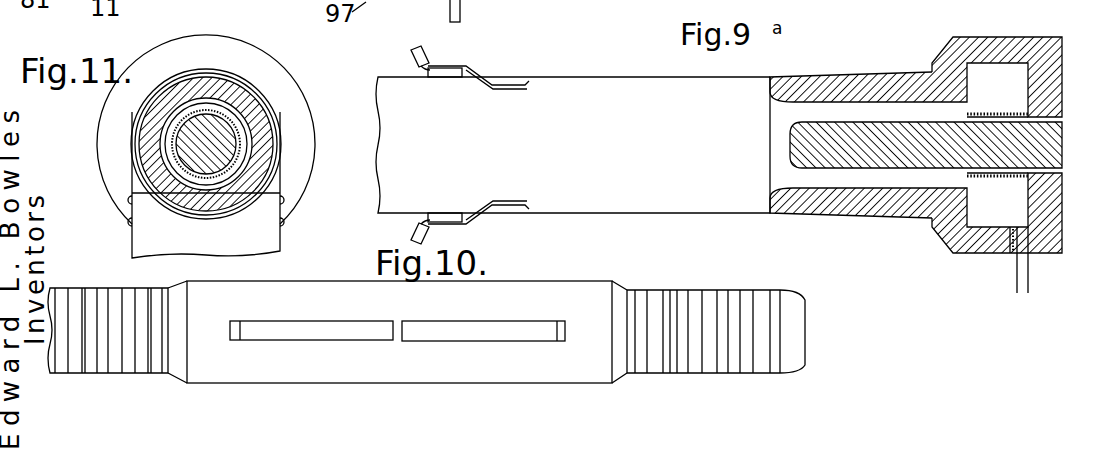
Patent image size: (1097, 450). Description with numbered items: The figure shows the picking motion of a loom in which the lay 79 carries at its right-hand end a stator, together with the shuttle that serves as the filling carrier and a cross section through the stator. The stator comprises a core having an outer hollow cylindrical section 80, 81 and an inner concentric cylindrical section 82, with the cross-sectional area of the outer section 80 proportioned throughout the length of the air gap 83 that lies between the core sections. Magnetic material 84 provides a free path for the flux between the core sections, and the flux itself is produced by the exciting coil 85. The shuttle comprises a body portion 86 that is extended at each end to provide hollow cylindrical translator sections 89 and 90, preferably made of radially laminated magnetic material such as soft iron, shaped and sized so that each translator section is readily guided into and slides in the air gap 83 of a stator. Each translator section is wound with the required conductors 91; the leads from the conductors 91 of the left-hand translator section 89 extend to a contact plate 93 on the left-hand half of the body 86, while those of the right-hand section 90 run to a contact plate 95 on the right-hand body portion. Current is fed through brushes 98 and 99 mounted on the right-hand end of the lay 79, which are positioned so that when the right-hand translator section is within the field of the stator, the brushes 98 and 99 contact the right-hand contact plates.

In FIG. 9A, the lay 79 is at (657, 207).
In FIG. 11, the lay 79 is at (213, 242).
In FIG. 9A, the outer hollow cylindrical section 80 is at (825, 213).
In FIG. 11, the outer hollow cylindrical section 80 is at (236, 134).
In FIG. 9A, the outer hollow cylindrical section 81 is at (970, 253).
In FIG. 11, the outer hollow cylindrical section 81 is at (262, 63).
In FIG. 9A, the inner concentric cylindrical section 82 is at (815, 138).
In FIG. 11, the inner concentric cylindrical section 82 is at (218, 157).
In FIG. 9A, the air gap 83 is at (836, 107).
In FIG. 9A, the magnetic material 84 is at (1060, 217).
In FIG. 9A, the exciting coil 85 is at (992, 73).
In FIG. 10, the body portion 86 is at (315, 372).
In FIG. 11, the translator section 89 is at (238, 139).
In FIG. 10, the translator section 89 is at (115, 295).
In FIG. 10, the translator section 90 is at (735, 302).
In FIG. 11, the conductors 91 is at (243, 148).
In FIG. 10, the conductors 91 is at (102, 368).
In FIG. 10, the contact plate 93 is at (277, 327).
In FIG. 10, the contact plate 95 is at (468, 330).
In FIG. 9A, the brush 98 is at (504, 88).
In FIG. 9A, the brush 99 is at (503, 206).